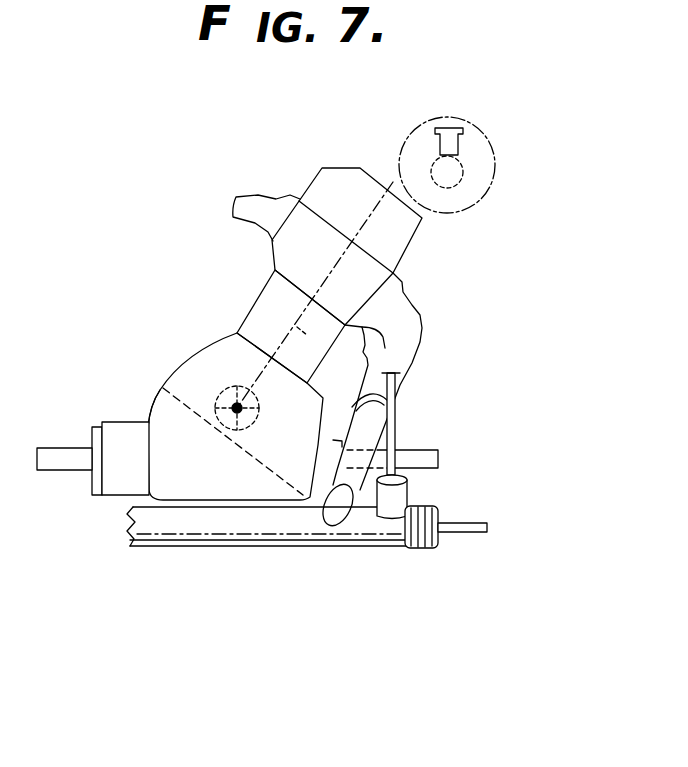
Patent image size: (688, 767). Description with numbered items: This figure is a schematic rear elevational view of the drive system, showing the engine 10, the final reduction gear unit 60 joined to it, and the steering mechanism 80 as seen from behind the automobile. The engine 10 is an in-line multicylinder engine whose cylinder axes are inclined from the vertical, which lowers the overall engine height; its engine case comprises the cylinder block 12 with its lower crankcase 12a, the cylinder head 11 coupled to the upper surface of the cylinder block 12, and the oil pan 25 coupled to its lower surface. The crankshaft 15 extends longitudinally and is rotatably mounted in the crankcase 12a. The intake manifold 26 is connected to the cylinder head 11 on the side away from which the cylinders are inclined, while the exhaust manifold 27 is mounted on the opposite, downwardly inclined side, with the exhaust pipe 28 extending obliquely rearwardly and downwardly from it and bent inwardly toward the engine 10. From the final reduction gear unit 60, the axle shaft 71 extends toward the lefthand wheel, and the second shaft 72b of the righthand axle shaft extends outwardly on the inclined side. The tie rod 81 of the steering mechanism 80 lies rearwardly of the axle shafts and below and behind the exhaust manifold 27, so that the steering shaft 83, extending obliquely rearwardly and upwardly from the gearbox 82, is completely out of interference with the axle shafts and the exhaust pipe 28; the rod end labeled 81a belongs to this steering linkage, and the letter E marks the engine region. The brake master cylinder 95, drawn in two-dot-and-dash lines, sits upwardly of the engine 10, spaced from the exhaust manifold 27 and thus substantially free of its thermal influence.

The engine 10 is at (444, 262).
The cylinder head 11 is at (280, 255).
The cylinder block 12 is at (258, 308).
The lower crankcase 12a is at (187, 368).
The crankshaft 15 is at (258, 424).
The oil pan 25 is at (163, 417).
The intake manifold 26 is at (249, 203).
The exhaust manifold 27 is at (422, 322).
The exhaust pipe 28 is at (341, 530).
The final reduction gear unit 60 is at (128, 480).
The axle shaft 71 is at (60, 457).
The second shaft 72b is at (438, 460).
The steering mechanism 80 is at (384, 566).
The tie rod 81 is at (273, 545).
The rack shaft 81a is at (495, 515).
The gearbox 82 is at (407, 495).
The steering shaft 83 is at (397, 438).
The brake master cylinder 95 is at (493, 160).
The axis E is at (310, 343).